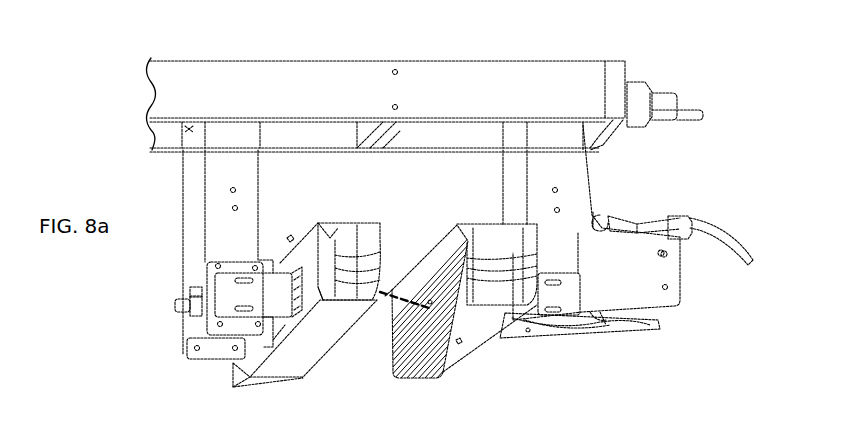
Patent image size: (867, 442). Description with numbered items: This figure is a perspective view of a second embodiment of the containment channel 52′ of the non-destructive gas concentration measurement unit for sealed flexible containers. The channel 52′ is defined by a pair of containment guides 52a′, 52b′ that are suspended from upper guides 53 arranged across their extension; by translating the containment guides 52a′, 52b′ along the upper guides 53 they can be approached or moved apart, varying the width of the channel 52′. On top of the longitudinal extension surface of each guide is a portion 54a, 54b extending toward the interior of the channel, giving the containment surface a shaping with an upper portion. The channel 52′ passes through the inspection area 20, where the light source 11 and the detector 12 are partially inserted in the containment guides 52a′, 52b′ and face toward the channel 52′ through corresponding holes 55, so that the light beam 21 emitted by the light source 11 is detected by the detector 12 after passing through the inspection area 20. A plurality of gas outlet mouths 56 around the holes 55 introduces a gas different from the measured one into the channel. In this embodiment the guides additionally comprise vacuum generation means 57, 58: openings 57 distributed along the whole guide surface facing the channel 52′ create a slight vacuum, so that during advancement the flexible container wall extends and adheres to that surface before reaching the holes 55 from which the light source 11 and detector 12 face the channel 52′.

The upper guides 53 is at (467, 70).
The containment guide 52b′ is at (347, 250).
The containment guide 52a′ is at (510, 252).
The containment channel 52′ is at (362, 365).
The portion 54a is at (418, 262).
The portion 54b is at (378, 240).
The inspection area 20 is at (413, 294).
The light beam 21 is at (385, 302).
The openings 57 is at (430, 298).
The holes 55 is at (428, 302).
The gas outlet mouths 56 is at (580, 325).
The light source 11 is at (615, 213).
The detector 12 is at (186, 302).
The vacuum generation means 58 is at (621, 437).